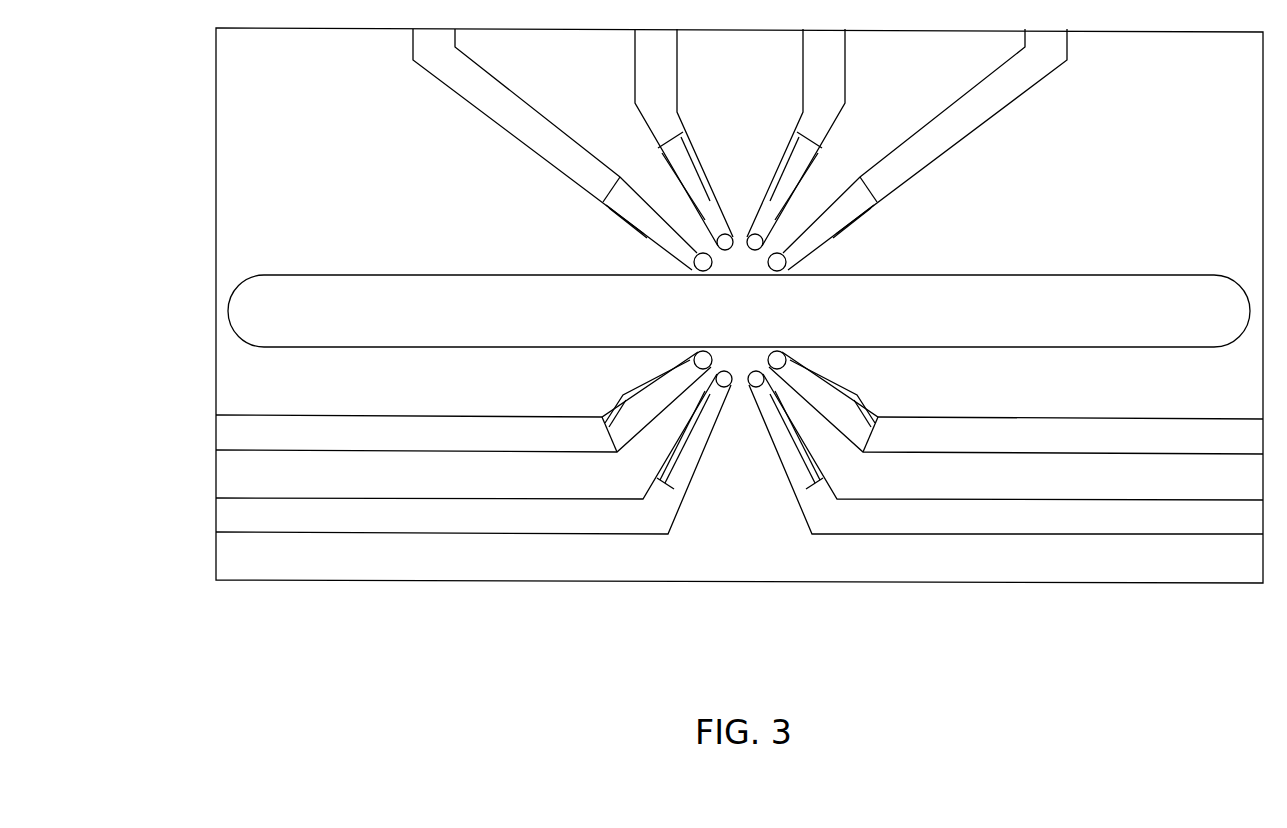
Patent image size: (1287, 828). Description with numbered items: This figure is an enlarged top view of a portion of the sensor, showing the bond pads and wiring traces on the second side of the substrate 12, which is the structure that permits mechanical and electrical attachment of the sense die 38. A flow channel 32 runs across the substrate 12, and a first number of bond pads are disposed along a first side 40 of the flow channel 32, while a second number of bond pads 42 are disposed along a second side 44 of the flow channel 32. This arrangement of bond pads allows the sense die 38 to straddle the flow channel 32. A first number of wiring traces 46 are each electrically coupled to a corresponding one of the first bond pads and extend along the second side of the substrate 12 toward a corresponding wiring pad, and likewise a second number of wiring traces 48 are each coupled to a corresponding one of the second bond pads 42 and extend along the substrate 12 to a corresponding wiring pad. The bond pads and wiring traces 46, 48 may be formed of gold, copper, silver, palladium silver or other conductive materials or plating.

The substrate 12 is at (1146, 63).
The flow channel 32 is at (907, 322).
The sense die 38 is at (680, 157).
The first side of the flow channel 40 is at (1030, 275).
The second number of bond pads 42 is at (695, 355).
The second side of the flow channel 44 is at (1007, 350).
The first number of wiring traces 46 is at (940, 150).
The second number of wiring traces 48 is at (940, 423).